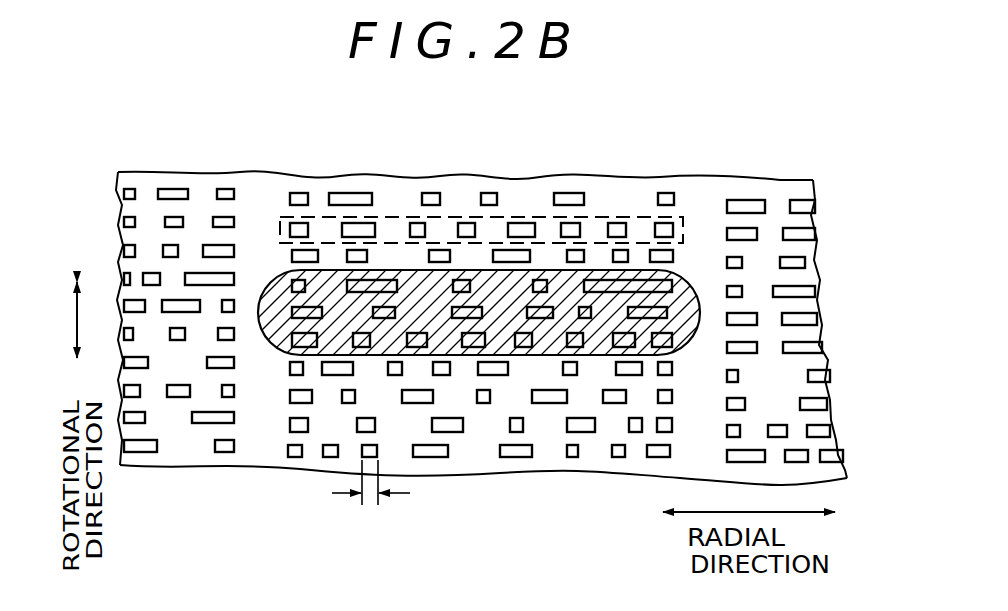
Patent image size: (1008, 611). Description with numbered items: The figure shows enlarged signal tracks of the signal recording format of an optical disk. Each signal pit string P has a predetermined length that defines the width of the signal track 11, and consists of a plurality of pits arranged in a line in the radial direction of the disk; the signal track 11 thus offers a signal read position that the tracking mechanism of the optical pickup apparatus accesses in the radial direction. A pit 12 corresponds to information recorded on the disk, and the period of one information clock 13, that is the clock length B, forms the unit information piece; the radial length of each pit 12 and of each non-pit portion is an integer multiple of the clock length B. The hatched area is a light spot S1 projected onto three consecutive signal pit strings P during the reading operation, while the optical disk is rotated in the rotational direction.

The signal track 11 is at (673, 163).
The pit 12 is at (523, 457).
The period of one information clock 13 is at (365, 452).
The light spot S1 is at (277, 270).
The signal pit string P is at (683, 220).
The clock length B is at (371, 500).